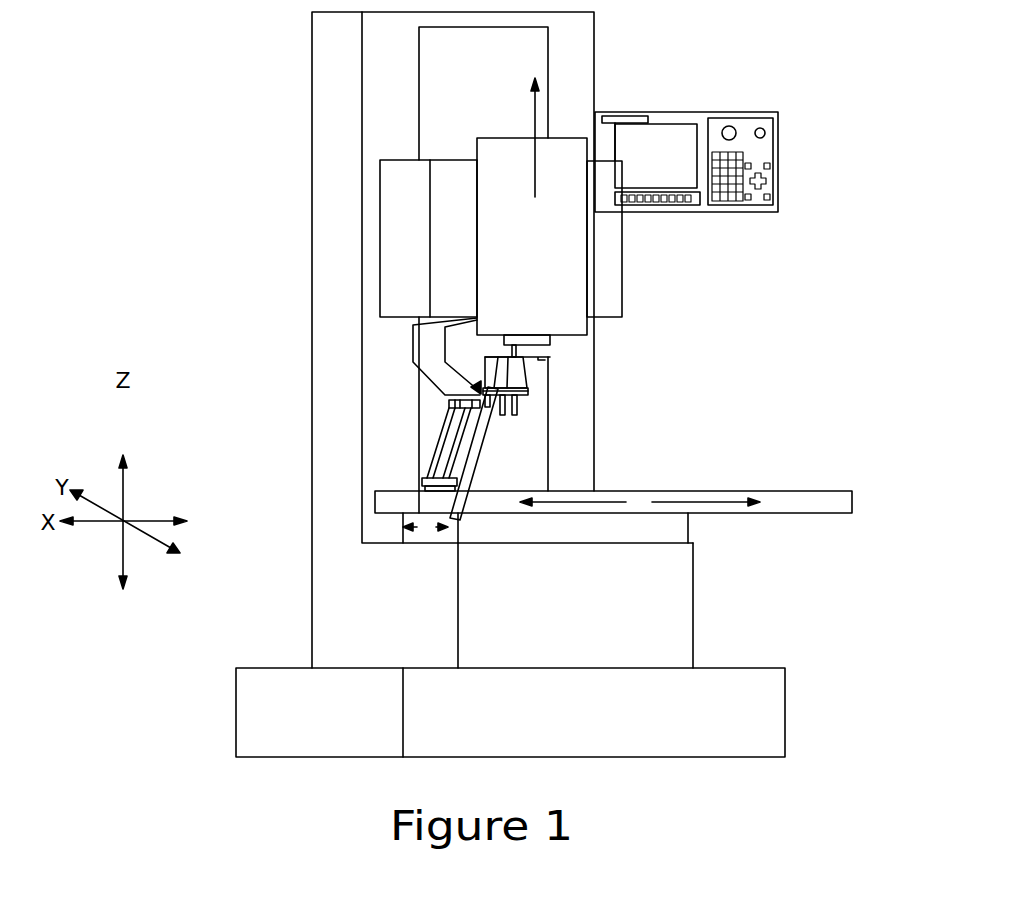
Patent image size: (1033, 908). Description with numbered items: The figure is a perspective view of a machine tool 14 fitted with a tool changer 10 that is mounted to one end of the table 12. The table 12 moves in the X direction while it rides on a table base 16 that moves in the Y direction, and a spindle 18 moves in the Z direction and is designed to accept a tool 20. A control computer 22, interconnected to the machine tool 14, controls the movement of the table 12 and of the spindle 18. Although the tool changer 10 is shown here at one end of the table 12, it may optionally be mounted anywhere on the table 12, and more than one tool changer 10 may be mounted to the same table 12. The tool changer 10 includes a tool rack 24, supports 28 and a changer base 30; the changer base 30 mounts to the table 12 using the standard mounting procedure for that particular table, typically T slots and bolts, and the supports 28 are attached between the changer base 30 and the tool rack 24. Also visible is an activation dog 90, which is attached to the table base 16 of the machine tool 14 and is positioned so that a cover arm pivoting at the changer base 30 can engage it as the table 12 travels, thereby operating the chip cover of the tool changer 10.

The tool changer 10 is at (377, 388).
The table 12 is at (832, 512).
The machine tool 14 is at (673, 617).
The table base 16 is at (575, 539).
The spindle 18 is at (553, 343).
The tool 20 is at (517, 376).
The control computer 22 is at (778, 176).
The tool rack 24 is at (528, 393).
The supports 28 is at (435, 453).
The changer base 30 is at (518, 455).
The activation dog 90 is at (460, 518).